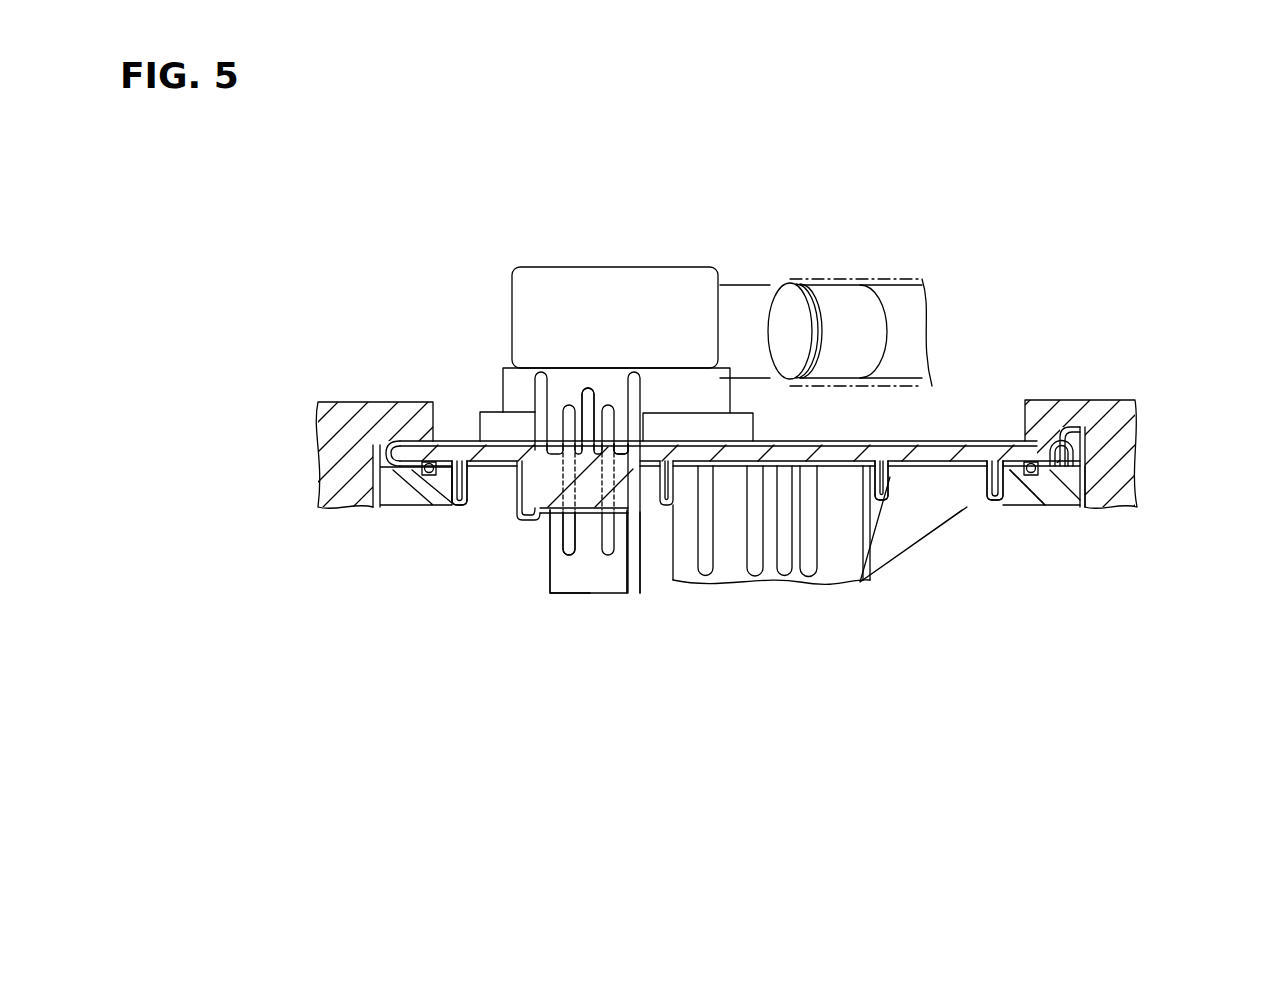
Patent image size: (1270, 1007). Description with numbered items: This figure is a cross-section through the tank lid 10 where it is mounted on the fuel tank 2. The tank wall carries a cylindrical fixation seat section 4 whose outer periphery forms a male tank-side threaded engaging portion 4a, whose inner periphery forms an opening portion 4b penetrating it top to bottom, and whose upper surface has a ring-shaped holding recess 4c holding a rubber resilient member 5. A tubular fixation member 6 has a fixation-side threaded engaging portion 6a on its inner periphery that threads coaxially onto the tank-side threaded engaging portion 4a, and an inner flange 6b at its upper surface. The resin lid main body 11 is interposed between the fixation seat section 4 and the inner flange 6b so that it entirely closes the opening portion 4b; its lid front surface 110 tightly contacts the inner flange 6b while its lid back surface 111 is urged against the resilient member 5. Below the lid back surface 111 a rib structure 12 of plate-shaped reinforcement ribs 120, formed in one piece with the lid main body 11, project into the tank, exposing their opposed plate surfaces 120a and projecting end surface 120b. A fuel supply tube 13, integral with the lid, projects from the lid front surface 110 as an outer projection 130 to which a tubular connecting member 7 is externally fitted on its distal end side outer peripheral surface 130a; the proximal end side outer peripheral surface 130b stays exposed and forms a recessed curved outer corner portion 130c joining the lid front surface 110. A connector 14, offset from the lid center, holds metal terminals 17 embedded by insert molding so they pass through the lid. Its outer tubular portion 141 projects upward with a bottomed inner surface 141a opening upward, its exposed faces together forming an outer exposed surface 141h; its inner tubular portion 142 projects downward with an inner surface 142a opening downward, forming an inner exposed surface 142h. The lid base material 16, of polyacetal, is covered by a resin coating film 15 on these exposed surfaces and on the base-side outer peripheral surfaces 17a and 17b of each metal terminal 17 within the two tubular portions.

The fuel tank 2 is at (390, 498).
The fixation seat section 4 is at (1093, 497).
The tank-side threaded engaging portion 4a is at (1087, 497).
The opening portion 4b is at (1000, 502).
The holding recess 4c is at (1050, 493).
The resilient member 5 is at (1032, 462).
The fixation member 6 is at (345, 407).
The fixation-side threaded engaging portion 6a is at (1087, 497).
The inner flange 6b is at (1062, 435).
The connecting member 7 is at (902, 280).
The tank lid 10 is at (1002, 428).
The lid main body 11 is at (1107, 450).
The rib structure 12 is at (906, 482).
The fuel supply tube 13 is at (513, 266).
The connector 14 is at (530, 420).
The resin coating film 15 is at (426, 462).
The lid base material 16 is at (386, 452).
The metal terminals 17 is at (641, 437).
The outer peripheral surface of base side of metal terminal 17a is at (612, 445).
The outer peripheral surface of base side of metal terminal 17b is at (617, 520).
The lid front surface 110 is at (1082, 432).
The lid back surface 111 is at (1085, 485).
The reinforcement ribs 120 is at (360, 552).
The opposed plate surfaces 120a is at (452, 477).
The projecting end surface 120b is at (460, 503).
The outer projection 130 is at (775, 209).
The distal end side outer peripheral surface 130a is at (830, 286).
The proximal end side outer peripheral surface 130b is at (748, 286).
The outer corner portion 130c is at (757, 440).
The outer tubular portion 141 is at (540, 430).
The inner surface of outer tubular portion 141a is at (580, 440).
The outer exposed surface 141h is at (612, 450).
The inner tubular portion 142 is at (628, 595).
The inner surface of inner tubular portion 142a is at (623, 562).
The inner exposed surface 142h is at (632, 565).